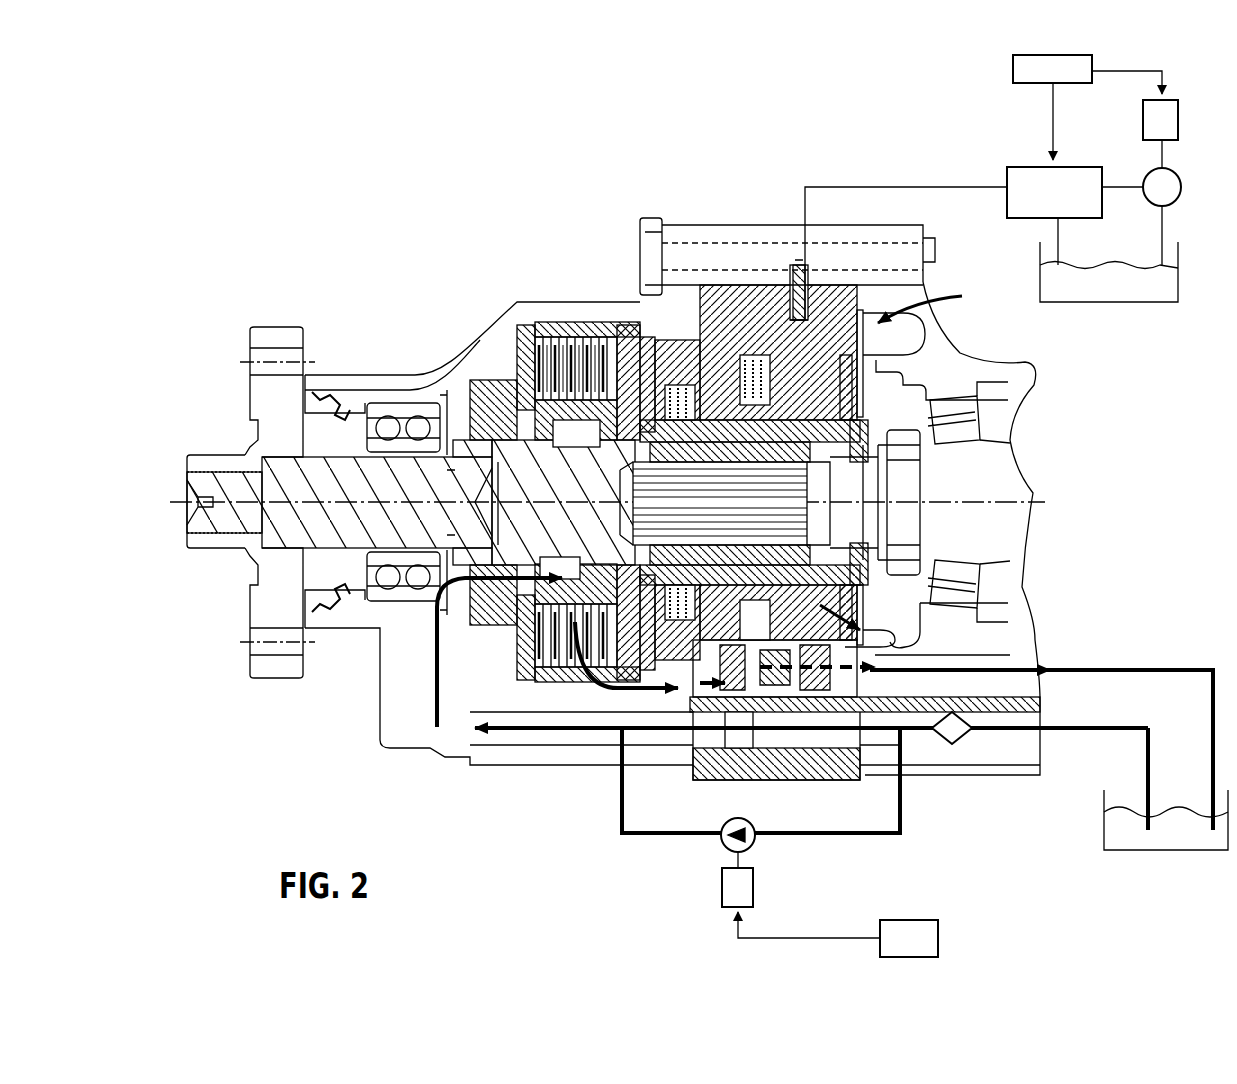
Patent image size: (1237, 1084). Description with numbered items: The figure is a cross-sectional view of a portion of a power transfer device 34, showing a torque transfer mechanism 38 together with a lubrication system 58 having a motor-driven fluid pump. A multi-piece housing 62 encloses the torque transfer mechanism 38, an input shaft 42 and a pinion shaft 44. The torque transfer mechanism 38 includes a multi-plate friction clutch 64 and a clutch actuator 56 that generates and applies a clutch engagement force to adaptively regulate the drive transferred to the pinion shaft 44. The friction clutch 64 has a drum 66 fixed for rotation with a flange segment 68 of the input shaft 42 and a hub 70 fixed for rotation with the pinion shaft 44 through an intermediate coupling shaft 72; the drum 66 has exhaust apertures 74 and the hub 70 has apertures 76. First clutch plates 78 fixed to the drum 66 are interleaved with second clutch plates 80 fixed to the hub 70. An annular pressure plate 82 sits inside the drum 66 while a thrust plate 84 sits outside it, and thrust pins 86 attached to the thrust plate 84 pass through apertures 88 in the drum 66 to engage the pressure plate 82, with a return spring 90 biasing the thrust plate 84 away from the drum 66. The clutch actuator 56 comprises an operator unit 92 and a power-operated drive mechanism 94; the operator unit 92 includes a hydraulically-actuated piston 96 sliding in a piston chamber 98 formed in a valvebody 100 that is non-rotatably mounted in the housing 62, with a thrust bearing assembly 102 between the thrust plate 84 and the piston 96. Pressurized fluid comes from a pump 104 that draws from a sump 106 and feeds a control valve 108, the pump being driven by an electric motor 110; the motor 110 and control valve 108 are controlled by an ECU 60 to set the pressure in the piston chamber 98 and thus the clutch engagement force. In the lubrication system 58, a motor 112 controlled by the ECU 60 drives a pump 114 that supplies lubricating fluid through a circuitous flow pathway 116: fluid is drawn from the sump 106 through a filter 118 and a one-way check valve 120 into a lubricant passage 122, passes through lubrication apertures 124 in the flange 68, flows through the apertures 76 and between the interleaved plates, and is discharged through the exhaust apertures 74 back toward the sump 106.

The power transfer device 34 is at (450, 272).
The torque transfer mechanism 38 is at (570, 705).
The input shaft 42 is at (188, 520).
The pinion shaft 44 is at (1015, 455).
The clutch actuator 56 is at (888, 155).
The lubrication system 58 is at (645, 855).
The ECU 60 is at (932, 922).
The multi-piece housing 62 is at (517, 302).
The multi-plate friction clutch 64 is at (598, 320).
The drum 66 is at (642, 345).
The flange segment 68 is at (527, 345).
The hub 70 is at (497, 412).
The intermediate coupling shaft 72 is at (520, 520).
The apertures 74 is at (585, 330).
The apertures 76 is at (592, 578).
The first clutch plates 78 is at (547, 407).
The second clutch plates 80 is at (552, 410).
The pressure plate 82 is at (653, 330).
The thrust plate 84 is at (730, 395).
The thrust pins 86 is at (690, 355).
The apertures 88 is at (673, 355).
The return spring 90 is at (757, 380).
The operator unit 92 is at (962, 296).
The power-operated drive mechanism 94 is at (1090, 145).
The piston 96 is at (850, 655).
The piston chamber 98 is at (880, 670).
The valvebody 100 is at (861, 343).
The thrust bearing assembly 102 is at (871, 360).
The pump 104 is at (1181, 188).
The sump 106 is at (1130, 815).
The control valve 108 is at (1028, 170).
The electric motor 110 is at (1178, 113).
The motor 112 is at (753, 890).
The pump 114 is at (757, 826).
The circuitous flow pathway 116 is at (625, 735).
The filter 118 is at (960, 742).
The one-way check valve 120 is at (738, 730).
The lubricant passage 122 is at (430, 730).
The lubrication apertures 124 is at (493, 398).